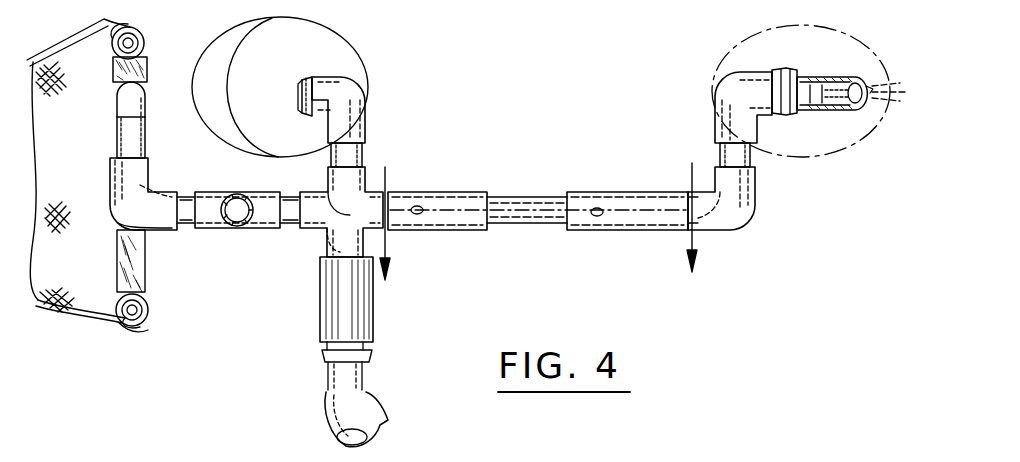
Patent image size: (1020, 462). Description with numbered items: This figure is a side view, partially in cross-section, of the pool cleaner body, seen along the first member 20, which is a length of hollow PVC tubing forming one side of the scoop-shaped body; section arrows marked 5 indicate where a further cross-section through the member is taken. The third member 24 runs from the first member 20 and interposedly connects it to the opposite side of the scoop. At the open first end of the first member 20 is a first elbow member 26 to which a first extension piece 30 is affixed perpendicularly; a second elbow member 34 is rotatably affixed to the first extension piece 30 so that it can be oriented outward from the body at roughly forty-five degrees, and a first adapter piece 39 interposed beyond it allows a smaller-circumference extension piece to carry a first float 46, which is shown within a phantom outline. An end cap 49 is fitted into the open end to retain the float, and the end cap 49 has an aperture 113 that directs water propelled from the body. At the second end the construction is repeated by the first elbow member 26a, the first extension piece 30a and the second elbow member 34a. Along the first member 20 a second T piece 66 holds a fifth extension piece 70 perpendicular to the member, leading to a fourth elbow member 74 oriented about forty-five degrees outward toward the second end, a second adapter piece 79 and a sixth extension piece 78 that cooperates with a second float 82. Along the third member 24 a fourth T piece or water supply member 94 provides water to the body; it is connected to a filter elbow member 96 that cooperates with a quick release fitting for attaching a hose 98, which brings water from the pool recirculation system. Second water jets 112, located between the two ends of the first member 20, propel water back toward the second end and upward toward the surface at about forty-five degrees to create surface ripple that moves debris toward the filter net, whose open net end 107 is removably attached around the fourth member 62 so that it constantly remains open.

The first member 20 is at (530, 192).
The third member 24 is at (240, 228).
The first elbow member 26 is at (758, 212).
The first elbow member 26a is at (110, 168).
The first extension piece 30 is at (720, 156).
The first extension piece 30a is at (146, 140).
The second elbow member 34 is at (716, 88).
The second elbow member 34a is at (118, 96).
The first adapter piece 39 is at (792, 112).
The first float 46 is at (756, 30).
The end cap 49 is at (856, 78).
The fourth member 62 is at (149, 311).
The second T piece 66 is at (365, 180).
The fifth extension piece 70 is at (362, 152).
The fourth elbow member 74 is at (364, 95).
The sixth extension piece 78 is at (300, 84).
The second adapter piece 79 is at (312, 78).
The second float 82 is at (312, 26).
The water supply member 94 is at (210, 192).
The filter elbow member 96 is at (326, 236).
The hose 98 is at (330, 396).
The open net end 107 is at (150, 272).
The second water jet 112 is at (596, 216).
The aperture 113 is at (872, 150).
The section line 5 is at (537, 244).